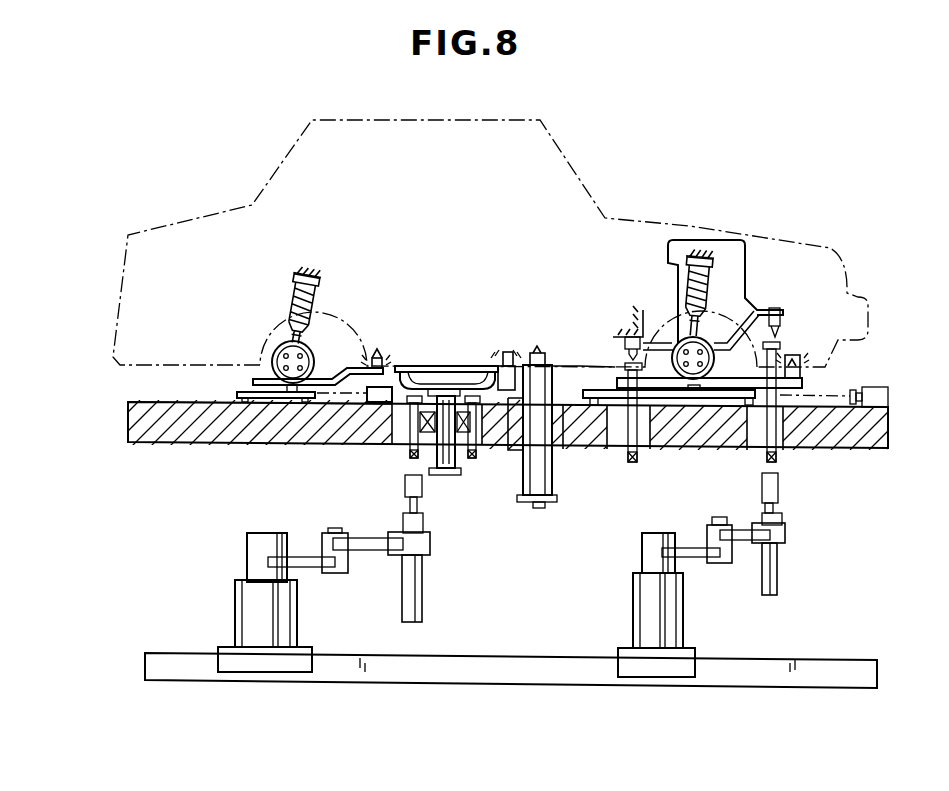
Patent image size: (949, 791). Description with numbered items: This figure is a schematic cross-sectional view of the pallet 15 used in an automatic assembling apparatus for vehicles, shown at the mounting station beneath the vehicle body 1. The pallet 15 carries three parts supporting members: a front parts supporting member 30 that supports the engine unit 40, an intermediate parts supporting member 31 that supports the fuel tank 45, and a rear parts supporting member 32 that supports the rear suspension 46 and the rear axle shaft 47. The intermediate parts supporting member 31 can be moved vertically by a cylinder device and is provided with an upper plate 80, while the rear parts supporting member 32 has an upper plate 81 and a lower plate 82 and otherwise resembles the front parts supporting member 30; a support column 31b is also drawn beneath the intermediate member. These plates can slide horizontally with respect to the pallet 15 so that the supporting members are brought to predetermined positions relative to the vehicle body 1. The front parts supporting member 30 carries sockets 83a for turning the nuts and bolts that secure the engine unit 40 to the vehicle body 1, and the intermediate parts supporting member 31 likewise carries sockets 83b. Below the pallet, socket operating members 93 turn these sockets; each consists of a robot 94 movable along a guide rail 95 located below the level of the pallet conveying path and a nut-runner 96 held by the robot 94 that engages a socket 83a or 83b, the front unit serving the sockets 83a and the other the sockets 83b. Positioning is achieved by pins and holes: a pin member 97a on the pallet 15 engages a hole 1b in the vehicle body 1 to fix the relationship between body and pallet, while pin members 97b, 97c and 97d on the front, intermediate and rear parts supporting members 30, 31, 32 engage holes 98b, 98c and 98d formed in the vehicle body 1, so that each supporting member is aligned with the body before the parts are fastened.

The vehicle body 1 is at (562, 145).
The hole 1b is at (546, 357).
The pallet 15 is at (889, 436).
The front parts supporting member 30 is at (803, 384).
The intermediate parts supporting member 31 is at (366, 388).
The support column 31b is at (445, 476).
The rear parts supporting member 32 is at (203, 420).
The engine unit 40 is at (735, 240).
The fuel tank 45 is at (460, 370).
The rear suspension 46 is at (292, 284).
The rear axle shaft 47 is at (272, 357).
The upper plate 80 is at (504, 417).
The upper plate 81 is at (253, 381).
The lower plate 82 is at (297, 399).
The sockets 83a is at (628, 445).
The sockets 83b is at (408, 447).
The socket operating member 93 is at (253, 533).
The robot 94 is at (297, 608).
The guide rail 95 is at (465, 682).
The nut-runner 96 is at (405, 484).
The pin member 97a is at (540, 347).
The pin member 97b is at (803, 363).
The pin member 97c is at (500, 351).
The pin member 97d is at (377, 349).
The hole 98b is at (795, 355).
The hole 98c is at (515, 347).
The hole 98d is at (386, 362).